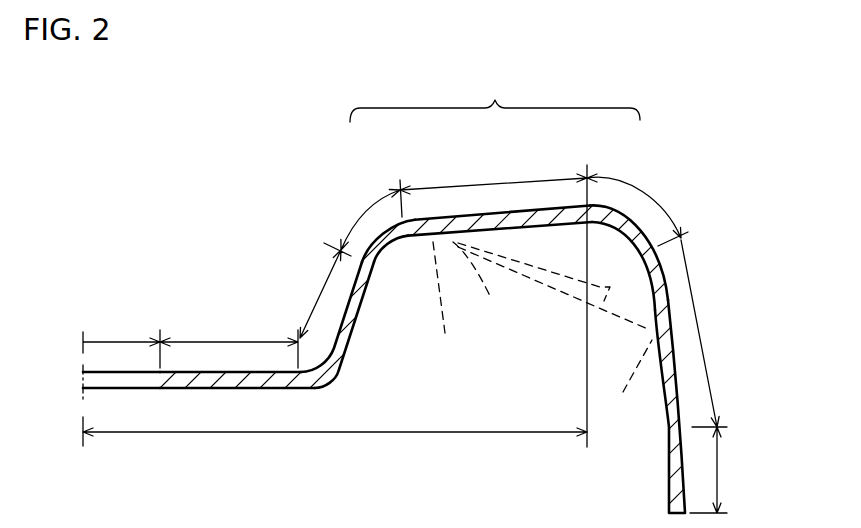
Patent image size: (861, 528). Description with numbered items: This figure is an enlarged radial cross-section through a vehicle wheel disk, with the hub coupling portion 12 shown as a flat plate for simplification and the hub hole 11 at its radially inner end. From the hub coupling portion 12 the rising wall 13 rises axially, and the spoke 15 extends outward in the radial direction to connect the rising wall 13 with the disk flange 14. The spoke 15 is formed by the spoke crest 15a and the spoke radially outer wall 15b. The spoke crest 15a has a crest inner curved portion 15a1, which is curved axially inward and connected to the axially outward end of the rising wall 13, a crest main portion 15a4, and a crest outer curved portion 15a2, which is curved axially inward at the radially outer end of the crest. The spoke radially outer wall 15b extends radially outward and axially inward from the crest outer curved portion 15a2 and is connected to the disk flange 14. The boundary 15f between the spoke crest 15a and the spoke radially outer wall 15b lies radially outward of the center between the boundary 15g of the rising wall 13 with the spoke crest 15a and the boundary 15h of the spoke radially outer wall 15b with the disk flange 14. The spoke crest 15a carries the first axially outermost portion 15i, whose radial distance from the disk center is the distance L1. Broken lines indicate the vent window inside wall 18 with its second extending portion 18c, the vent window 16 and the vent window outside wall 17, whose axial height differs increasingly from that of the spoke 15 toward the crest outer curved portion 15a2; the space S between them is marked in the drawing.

The hub hole 11 is at (125, 340).
The hub coupling portion 12 is at (230, 340).
The rising wall 13 is at (325, 293).
The disk flange 14 is at (717, 472).
The spoke 15 is at (434, 264).
The spoke crest 15a is at (514, 259).
The crest inner curved portion 15a1 is at (363, 207).
The crest outer curved portion 15a2 is at (640, 187).
The crest main portion 15a4 is at (482, 183).
The spoke radially outer wall 15b is at (693, 268).
The connecting portion of the spoke crest with the spoke radially outer wall 15f is at (642, 252).
The connecting portion of the rising wall with the spoke crest 15g is at (364, 262).
The connecting portion of the spoke radially outer wall with the disk flange 15h is at (668, 428).
The first axially outermost portion 15i is at (592, 224).
The vent window 16 is at (480, 282).
The vent window outside wall 17 is at (631, 379).
The vent window inside wall 18 is at (530, 300).
The second extending portion 18c is at (452, 300).
The space S is at (557, 262).
The distance L1 is at (335, 446).